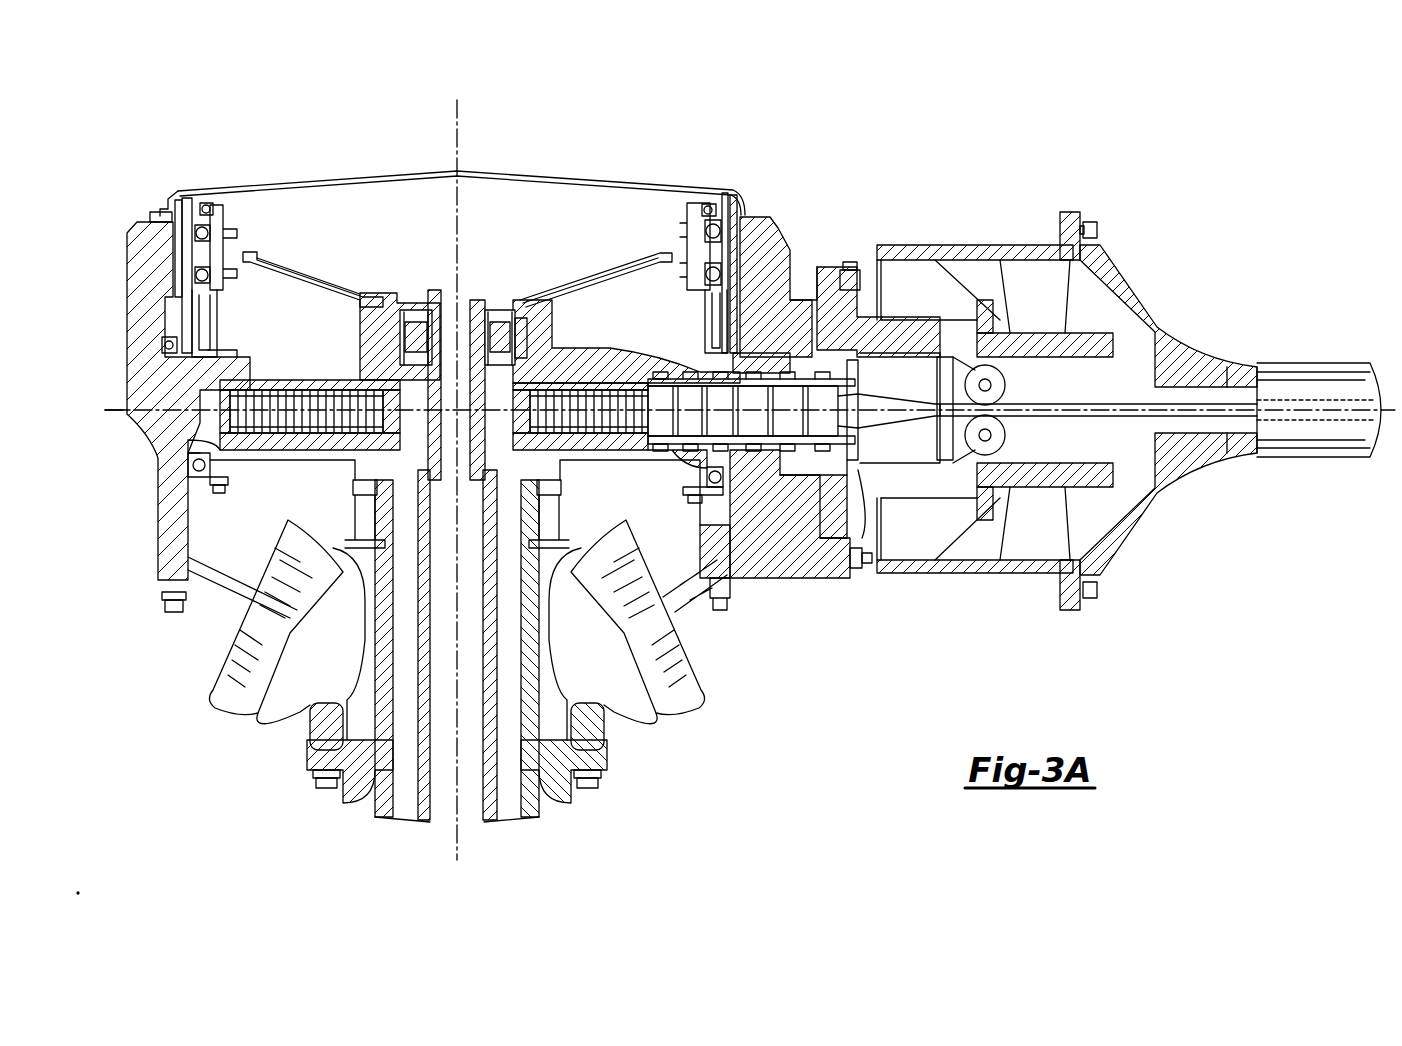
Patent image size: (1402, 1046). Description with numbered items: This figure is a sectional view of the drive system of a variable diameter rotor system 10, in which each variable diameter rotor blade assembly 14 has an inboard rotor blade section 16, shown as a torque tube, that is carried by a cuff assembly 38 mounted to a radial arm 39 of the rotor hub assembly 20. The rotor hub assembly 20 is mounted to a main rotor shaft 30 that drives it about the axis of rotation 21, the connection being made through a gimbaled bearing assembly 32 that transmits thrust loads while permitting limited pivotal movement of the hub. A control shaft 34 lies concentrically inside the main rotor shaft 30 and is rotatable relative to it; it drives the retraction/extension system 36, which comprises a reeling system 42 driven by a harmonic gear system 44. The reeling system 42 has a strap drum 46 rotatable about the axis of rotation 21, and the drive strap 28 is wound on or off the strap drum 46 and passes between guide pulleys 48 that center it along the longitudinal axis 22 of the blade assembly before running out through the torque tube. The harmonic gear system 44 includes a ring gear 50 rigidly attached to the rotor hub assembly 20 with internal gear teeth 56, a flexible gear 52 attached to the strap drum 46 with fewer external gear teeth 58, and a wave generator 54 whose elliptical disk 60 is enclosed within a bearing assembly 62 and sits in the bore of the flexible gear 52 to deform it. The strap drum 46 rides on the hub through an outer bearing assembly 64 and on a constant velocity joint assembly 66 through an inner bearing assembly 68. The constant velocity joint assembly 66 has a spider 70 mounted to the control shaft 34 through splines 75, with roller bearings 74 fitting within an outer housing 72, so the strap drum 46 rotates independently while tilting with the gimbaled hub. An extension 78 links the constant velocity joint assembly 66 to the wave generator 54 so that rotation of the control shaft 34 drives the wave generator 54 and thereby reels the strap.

The variable diameter rotor system 10 is at (763, 754).
The variable diameter rotor blade assembly 14 is at (1370, 482).
The inboard rotor blade section 16 is at (1290, 450).
The rotor hub assembly 20 is at (160, 510).
The axis of rotation 21 is at (466, 131).
The longitudinal axis 22 is at (890, 396).
The drive strap 28 is at (870, 425).
The main rotor shaft 30 is at (532, 800).
The gimbaled bearing assembly 32 is at (700, 656).
The control shaft 34 is at (488, 775).
The retraction/extension system 36 is at (505, 255).
The cuff assembly 38 is at (1137, 545).
The radial arm 39 is at (828, 575).
The reeling system 42 is at (582, 458).
The harmonic gear system 44 is at (266, 238).
The strap drum 46 is at (578, 372).
The guide pulley 48 is at (800, 440).
The ring gear 50 is at (743, 215).
The flexible gear 52 is at (700, 318).
The wave generator 54 is at (683, 224).
The internal gear teeth 56 is at (733, 213).
The external gear teeth 58 is at (722, 210).
The elliptical disk 60 is at (212, 212).
The bearing assembly 62 is at (208, 280).
The outer bearing assembly 64 is at (200, 480).
The constant velocity joint assembly 66 is at (416, 300).
The inner bearing assembly 68 is at (522, 337).
The spider 70 is at (492, 318).
The outer housing 72 is at (400, 362).
The roller bearings 74 is at (431, 320).
The splines 75 is at (474, 350).
The extension 78 is at (330, 300).